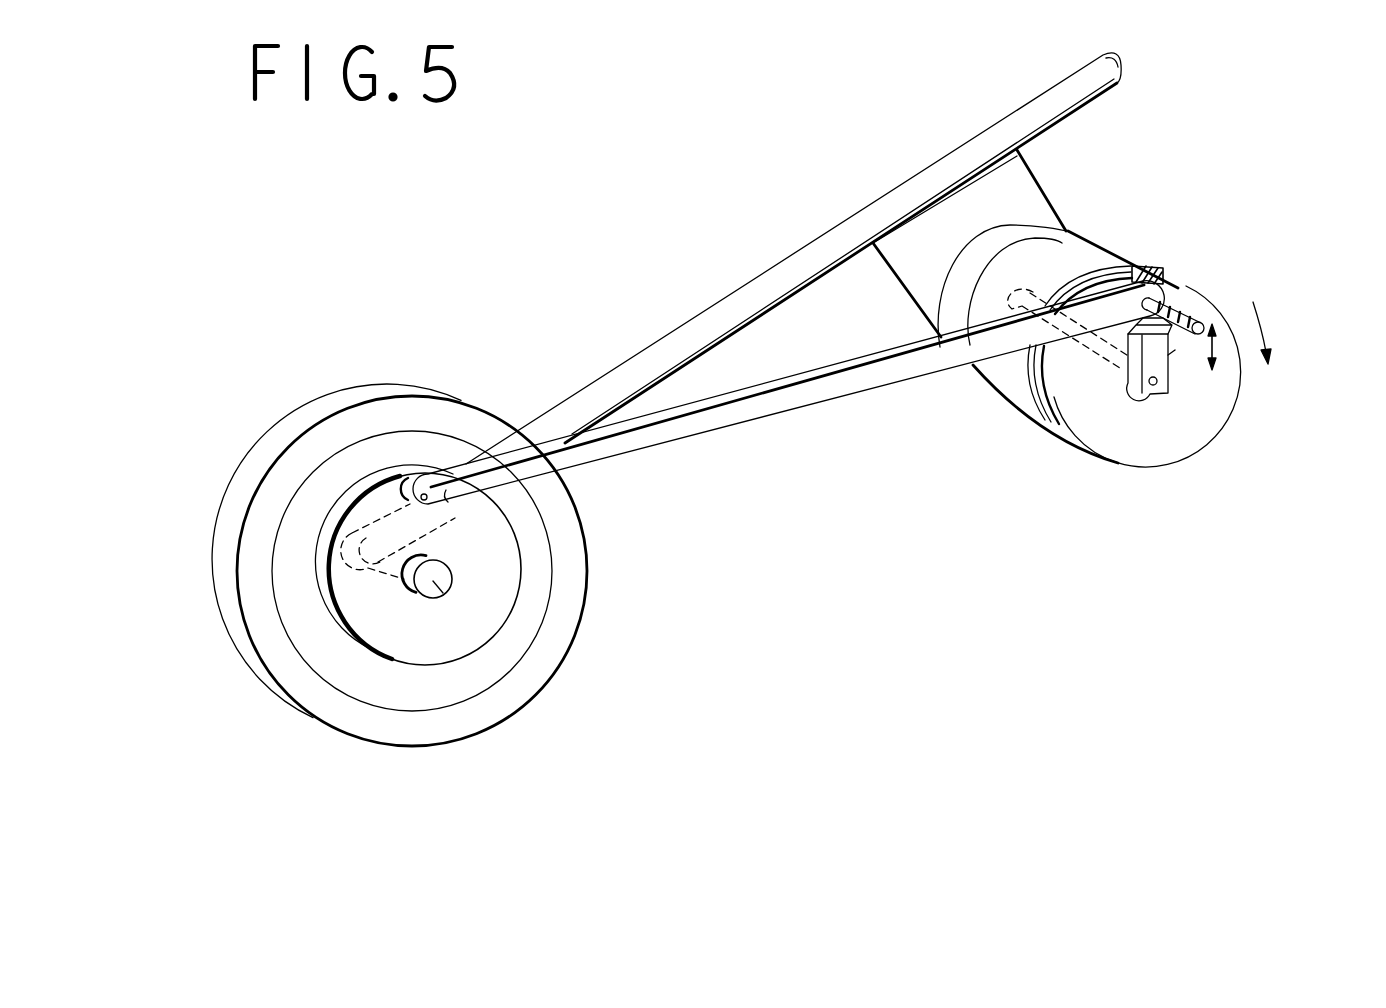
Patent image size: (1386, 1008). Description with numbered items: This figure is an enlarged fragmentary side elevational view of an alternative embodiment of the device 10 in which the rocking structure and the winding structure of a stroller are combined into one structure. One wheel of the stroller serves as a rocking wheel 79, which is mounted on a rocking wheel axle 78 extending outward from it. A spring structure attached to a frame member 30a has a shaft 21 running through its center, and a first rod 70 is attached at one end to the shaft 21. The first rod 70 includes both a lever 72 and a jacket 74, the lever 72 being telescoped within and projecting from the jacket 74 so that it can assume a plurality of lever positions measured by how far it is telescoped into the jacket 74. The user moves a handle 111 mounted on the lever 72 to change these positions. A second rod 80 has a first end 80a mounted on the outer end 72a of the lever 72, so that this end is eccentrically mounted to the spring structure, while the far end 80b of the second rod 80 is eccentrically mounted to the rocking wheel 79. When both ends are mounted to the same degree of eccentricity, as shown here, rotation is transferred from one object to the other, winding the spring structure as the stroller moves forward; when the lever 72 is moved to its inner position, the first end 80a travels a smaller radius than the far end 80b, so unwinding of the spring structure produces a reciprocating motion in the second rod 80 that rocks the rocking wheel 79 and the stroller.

The device 10 is at (737, 270).
The frame member 30a is at (1055, 105).
The second rod 80 is at (820, 340).
The first end of second rod 80a is at (1106, 292).
The far end of second rod 80b is at (450, 504).
The lever 72 is at (1182, 368).
The outer end of lever 72a is at (1164, 285).
The first rod 70 is at (1151, 398).
The jacket 74 is at (1166, 357).
The shaft 21 is at (1158, 386).
The handle 111 is at (1192, 320).
The rocking wheel axle 78 is at (437, 584).
The rocking wheel 79 is at (562, 672).